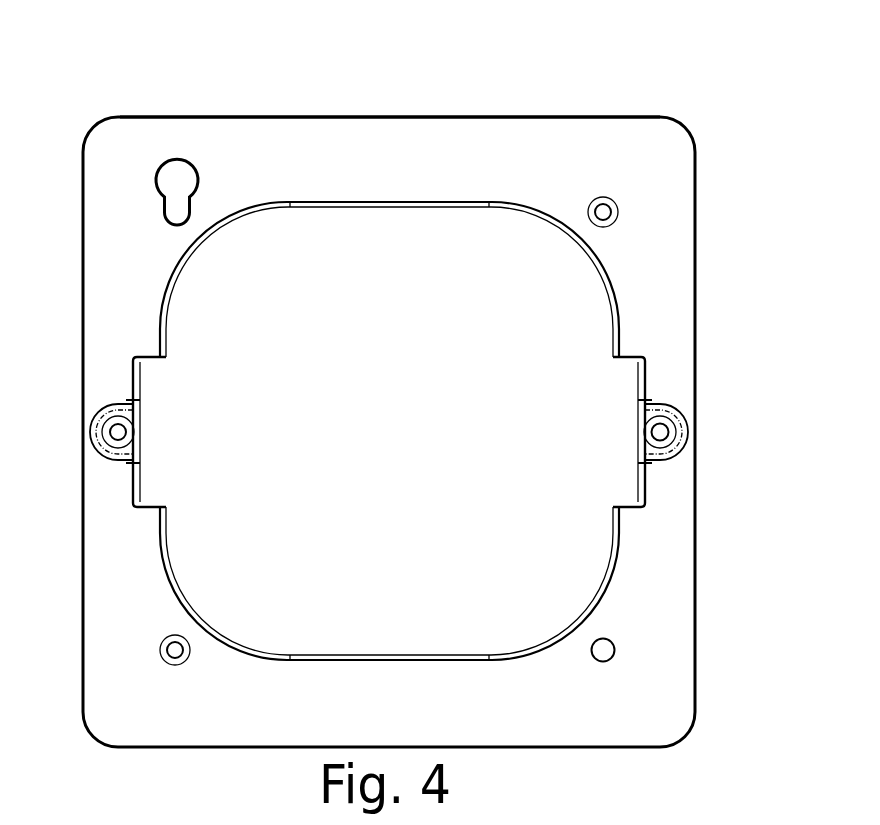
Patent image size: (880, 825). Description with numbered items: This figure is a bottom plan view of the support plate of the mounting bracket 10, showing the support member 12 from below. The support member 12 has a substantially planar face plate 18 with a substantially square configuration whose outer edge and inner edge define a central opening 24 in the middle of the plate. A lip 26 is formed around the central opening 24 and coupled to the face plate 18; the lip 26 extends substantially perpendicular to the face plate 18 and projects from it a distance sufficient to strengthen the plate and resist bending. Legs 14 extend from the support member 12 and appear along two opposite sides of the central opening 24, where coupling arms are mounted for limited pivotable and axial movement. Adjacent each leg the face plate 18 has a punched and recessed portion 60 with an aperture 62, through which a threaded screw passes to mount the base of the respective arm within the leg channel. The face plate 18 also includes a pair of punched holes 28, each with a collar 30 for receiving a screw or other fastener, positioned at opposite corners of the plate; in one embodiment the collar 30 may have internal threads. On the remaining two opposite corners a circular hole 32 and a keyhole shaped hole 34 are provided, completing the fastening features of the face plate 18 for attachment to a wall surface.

The mounting bracket 10 is at (427, 106).
The support member 12 is at (492, 142).
The legs 14 is at (143, 479).
The face plate 18 is at (595, 143).
The central opening 24 is at (328, 264).
The lip 26 is at (198, 610).
The punched holes 28 is at (612, 207).
The collar 30 is at (612, 220).
The circular hole 32 is at (615, 646).
The keyhole shaped hole 34 is at (170, 158).
The recessed portion 60 is at (128, 441).
The aperture 62 is at (127, 430).